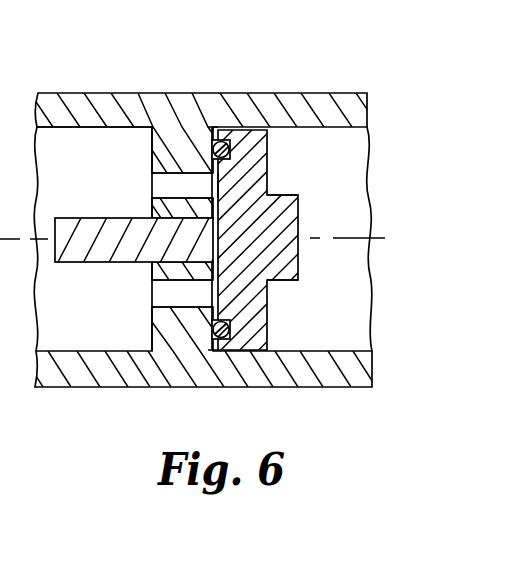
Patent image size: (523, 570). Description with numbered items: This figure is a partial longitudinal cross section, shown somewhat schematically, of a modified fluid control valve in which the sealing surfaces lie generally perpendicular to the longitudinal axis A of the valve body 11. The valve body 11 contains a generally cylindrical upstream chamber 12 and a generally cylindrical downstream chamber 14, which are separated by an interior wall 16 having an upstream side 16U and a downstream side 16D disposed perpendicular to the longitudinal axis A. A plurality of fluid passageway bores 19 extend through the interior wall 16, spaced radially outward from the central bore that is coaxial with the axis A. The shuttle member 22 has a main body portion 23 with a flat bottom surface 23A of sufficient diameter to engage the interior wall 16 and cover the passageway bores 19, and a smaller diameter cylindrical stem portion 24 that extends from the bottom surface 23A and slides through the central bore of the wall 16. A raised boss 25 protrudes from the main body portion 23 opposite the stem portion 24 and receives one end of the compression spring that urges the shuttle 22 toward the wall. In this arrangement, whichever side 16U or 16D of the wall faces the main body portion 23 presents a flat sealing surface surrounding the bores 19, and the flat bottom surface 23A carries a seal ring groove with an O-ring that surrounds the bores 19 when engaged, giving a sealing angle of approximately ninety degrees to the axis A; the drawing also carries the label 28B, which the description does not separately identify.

The valve body 11 is at (58, 108).
The upstream chamber 12 is at (340, 160).
The downstream chamber 14 is at (88, 163).
The interior wall 16 is at (163, 330).
The downstream side 16D is at (133, 128).
The upstream side 16U is at (203, 161).
The seal ring 28B is at (232, 191).
The fluid passageway bores 19 is at (160, 185).
The shuttle member 22 is at (305, 197).
The main body portion 23 is at (254, 250).
The flat bottom surface 23A is at (210, 184).
The stem portion 24 is at (78, 228).
The raised boss 25 is at (284, 284).
The longitudinal axis A is at (345, 238).